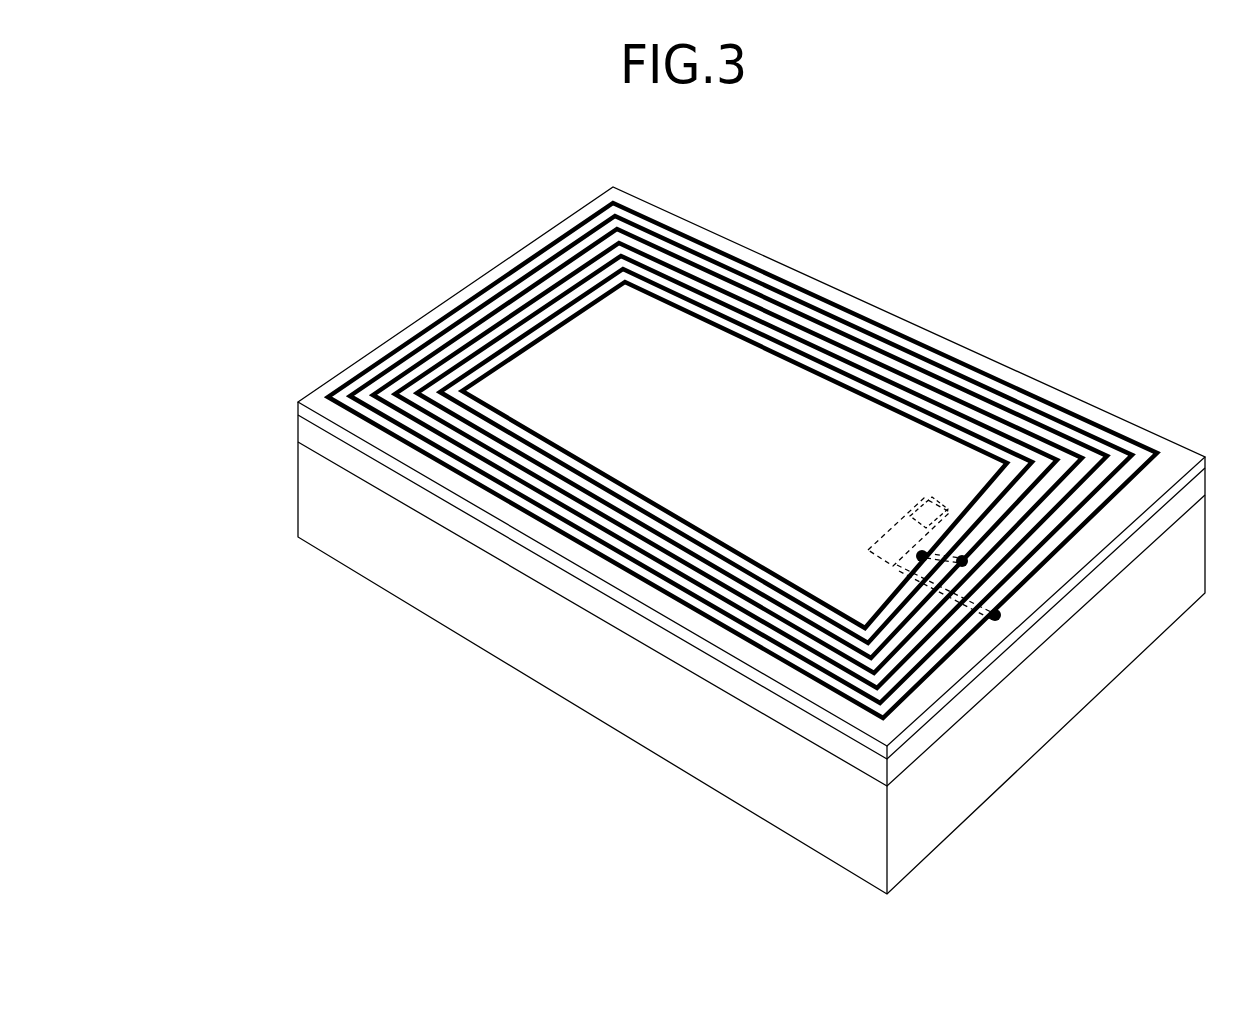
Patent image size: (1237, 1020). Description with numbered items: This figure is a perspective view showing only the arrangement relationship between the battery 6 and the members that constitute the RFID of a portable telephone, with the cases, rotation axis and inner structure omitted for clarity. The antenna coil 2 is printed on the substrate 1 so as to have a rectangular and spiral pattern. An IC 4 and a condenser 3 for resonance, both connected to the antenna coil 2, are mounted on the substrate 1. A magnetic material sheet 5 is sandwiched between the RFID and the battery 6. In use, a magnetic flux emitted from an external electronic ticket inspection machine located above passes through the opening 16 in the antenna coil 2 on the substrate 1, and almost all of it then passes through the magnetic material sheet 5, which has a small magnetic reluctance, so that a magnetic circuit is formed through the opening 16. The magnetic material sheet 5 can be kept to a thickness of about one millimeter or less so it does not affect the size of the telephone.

The substrate 1 is at (938, 342).
The antenna coil 2 is at (484, 291).
The condenser 3 is at (880, 542).
The IC 4 is at (928, 505).
The magnetic material sheet 5 is at (307, 423).
The battery 6 is at (928, 802).
The opening 16 is at (668, 360).